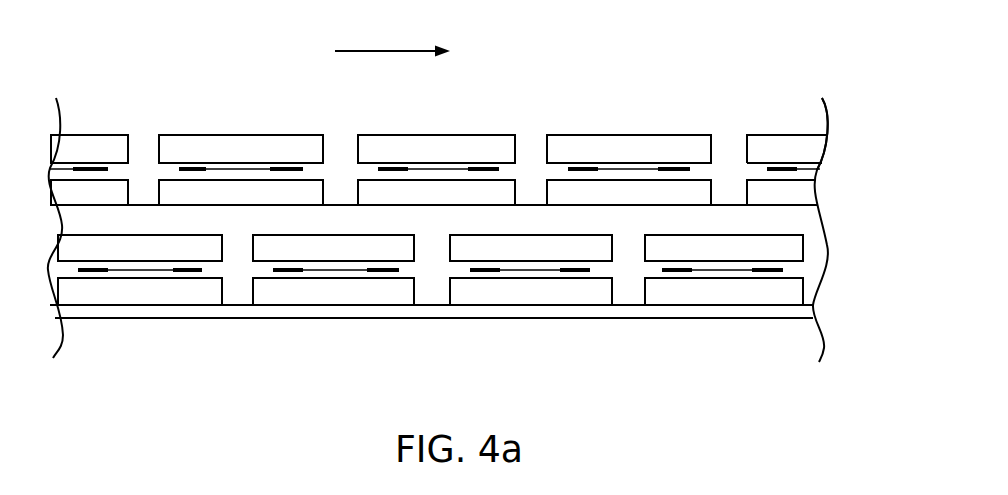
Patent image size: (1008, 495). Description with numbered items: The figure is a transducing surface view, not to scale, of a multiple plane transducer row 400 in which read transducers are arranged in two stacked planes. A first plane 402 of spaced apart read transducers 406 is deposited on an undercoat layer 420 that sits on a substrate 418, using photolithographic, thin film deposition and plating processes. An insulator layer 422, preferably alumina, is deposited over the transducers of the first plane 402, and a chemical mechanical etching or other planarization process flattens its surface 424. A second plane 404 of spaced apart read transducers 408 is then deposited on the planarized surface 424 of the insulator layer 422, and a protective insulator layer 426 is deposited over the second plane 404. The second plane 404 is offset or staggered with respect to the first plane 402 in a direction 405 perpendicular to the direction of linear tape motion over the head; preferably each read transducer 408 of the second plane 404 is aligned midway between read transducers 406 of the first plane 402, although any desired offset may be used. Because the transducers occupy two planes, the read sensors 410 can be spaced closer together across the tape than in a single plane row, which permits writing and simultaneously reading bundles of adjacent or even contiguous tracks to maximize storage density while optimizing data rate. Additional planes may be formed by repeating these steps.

The multiple plane transducer row 400 is at (664, 371).
The first plane 402 is at (837, 235).
The second plane 404 is at (837, 135).
The direction 405 is at (390, 50).
The read transducers 406 is at (273, 298).
The read transducers 408 is at (375, 135).
The read sensors 410 is at (440, 170).
The substrate 418 is at (808, 342).
The undercoat layer 420 is at (483, 312).
The insulator layer 422 is at (787, 217).
The surface 424 is at (525, 206).
The protective insulator layer 426 is at (808, 119).